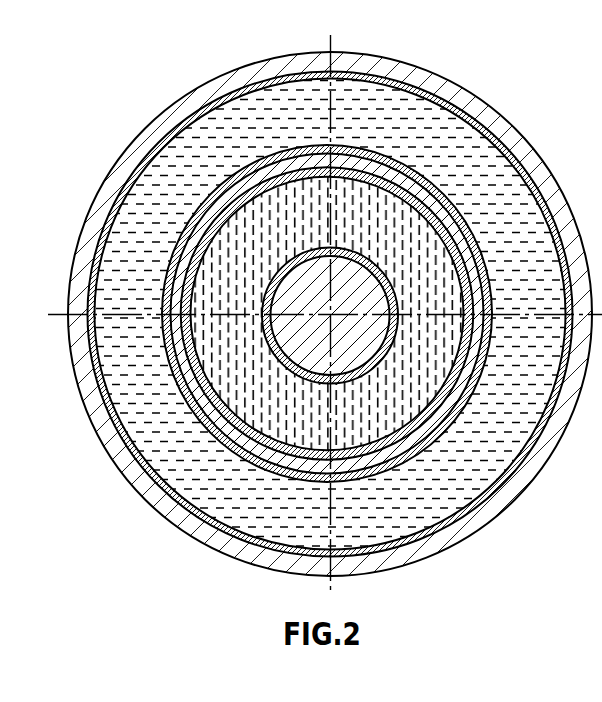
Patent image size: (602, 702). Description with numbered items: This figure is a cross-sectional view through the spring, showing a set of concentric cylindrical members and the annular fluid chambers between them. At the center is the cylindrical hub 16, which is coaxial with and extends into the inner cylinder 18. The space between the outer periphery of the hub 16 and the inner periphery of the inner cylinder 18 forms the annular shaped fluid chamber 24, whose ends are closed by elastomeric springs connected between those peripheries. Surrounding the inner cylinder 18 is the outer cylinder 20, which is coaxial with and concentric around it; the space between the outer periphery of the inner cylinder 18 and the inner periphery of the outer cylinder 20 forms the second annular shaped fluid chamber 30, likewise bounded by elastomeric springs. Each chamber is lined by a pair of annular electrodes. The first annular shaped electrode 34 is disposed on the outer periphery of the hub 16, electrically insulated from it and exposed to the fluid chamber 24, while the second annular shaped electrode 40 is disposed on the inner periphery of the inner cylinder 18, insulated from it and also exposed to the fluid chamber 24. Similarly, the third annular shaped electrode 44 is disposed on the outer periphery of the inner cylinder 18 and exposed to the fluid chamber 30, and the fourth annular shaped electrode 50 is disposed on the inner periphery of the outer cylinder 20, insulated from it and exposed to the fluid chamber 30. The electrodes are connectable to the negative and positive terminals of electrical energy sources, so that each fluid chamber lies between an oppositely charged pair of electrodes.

The outer cylinder 20 is at (110, 448).
The fourth annular shaped electrode 50 is at (98, 388).
The second annular shaped fluid chamber 30 is at (423, 493).
The cylindrical hub 16 is at (197, 430).
The third annular shaped electrode 44 is at (233, 452).
The inner cylinder 18 is at (277, 460).
The second annular shaped electrode 40 is at (362, 458).
The annular shaped fluid chamber 24 is at (395, 407).
The first annular shaped electrode 34 is at (387, 357).